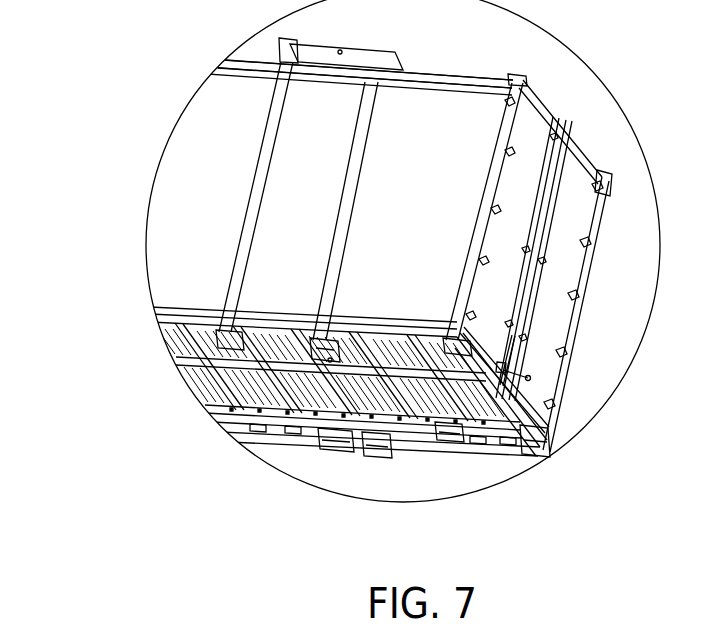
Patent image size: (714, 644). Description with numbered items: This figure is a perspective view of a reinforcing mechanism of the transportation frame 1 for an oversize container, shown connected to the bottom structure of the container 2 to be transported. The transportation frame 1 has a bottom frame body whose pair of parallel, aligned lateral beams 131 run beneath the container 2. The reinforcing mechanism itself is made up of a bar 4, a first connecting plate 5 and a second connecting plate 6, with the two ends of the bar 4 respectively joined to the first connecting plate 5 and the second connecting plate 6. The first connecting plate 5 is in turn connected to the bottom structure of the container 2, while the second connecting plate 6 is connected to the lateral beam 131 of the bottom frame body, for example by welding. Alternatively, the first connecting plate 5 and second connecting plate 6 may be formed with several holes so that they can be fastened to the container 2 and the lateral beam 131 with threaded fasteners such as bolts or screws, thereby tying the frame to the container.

The transportation frame 1 is at (243, 245).
The container 2 is at (185, 232).
The lateral beam 131 is at (318, 352).
The second connecting plate 6 is at (355, 447).
The bar 4 is at (383, 447).
The first connecting plate 5 is at (453, 443).